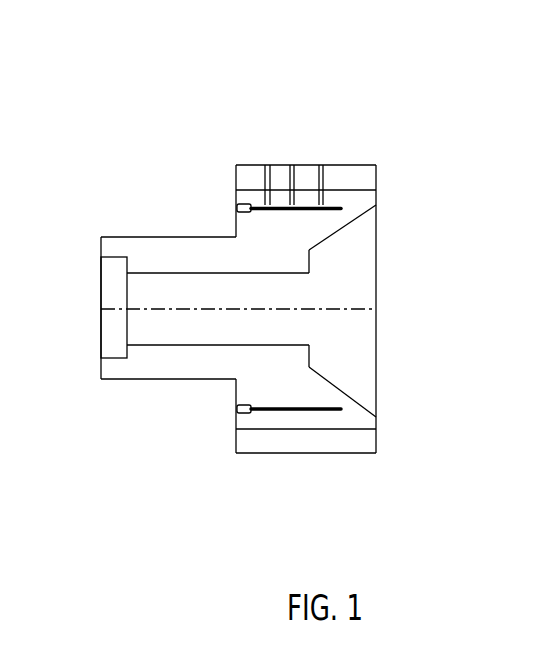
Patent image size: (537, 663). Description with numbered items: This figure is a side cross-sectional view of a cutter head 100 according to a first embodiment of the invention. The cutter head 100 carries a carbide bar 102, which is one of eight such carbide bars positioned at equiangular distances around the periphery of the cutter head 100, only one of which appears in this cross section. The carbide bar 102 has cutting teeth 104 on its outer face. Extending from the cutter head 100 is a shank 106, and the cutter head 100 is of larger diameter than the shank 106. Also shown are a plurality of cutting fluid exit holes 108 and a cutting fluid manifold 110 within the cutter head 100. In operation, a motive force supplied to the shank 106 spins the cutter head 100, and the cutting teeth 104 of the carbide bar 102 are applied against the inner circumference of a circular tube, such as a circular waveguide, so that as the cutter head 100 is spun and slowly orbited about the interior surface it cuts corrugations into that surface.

The cutter head 100 is at (423, 83).
The carbide bar 102 is at (380, 443).
The cutting teeth 104 is at (359, 455).
The shank 106 is at (128, 235).
The cutting fluid exit holes 108 is at (299, 165).
The cutting fluid manifold 110 is at (238, 207).